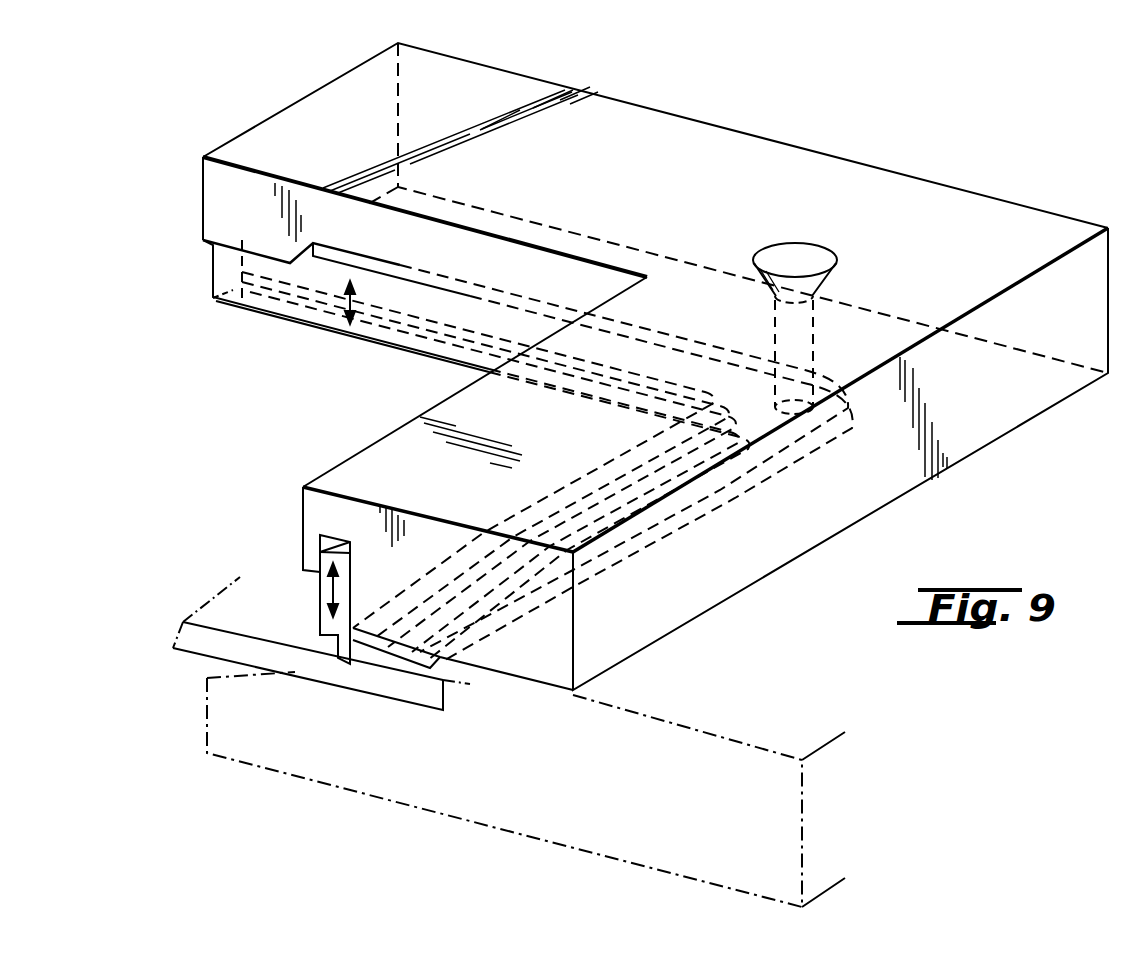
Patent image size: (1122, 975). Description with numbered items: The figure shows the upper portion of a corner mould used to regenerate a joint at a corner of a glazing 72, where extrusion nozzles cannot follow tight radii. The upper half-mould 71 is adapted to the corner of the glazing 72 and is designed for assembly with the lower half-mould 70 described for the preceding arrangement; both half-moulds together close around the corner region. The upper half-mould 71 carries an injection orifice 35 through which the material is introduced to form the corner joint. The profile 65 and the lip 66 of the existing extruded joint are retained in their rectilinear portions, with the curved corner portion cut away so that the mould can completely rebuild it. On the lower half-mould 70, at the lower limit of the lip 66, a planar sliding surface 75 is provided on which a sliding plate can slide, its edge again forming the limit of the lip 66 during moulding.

The upper half-mould 71 is at (828, 172).
The injection orifice 35 is at (792, 262).
The profile 65 is at (413, 676).
The glazing 72 is at (197, 648).
The lip 66 is at (493, 677).
The lower half-mould 70 is at (385, 795).
The planar sliding surface 75 is at (696, 723).